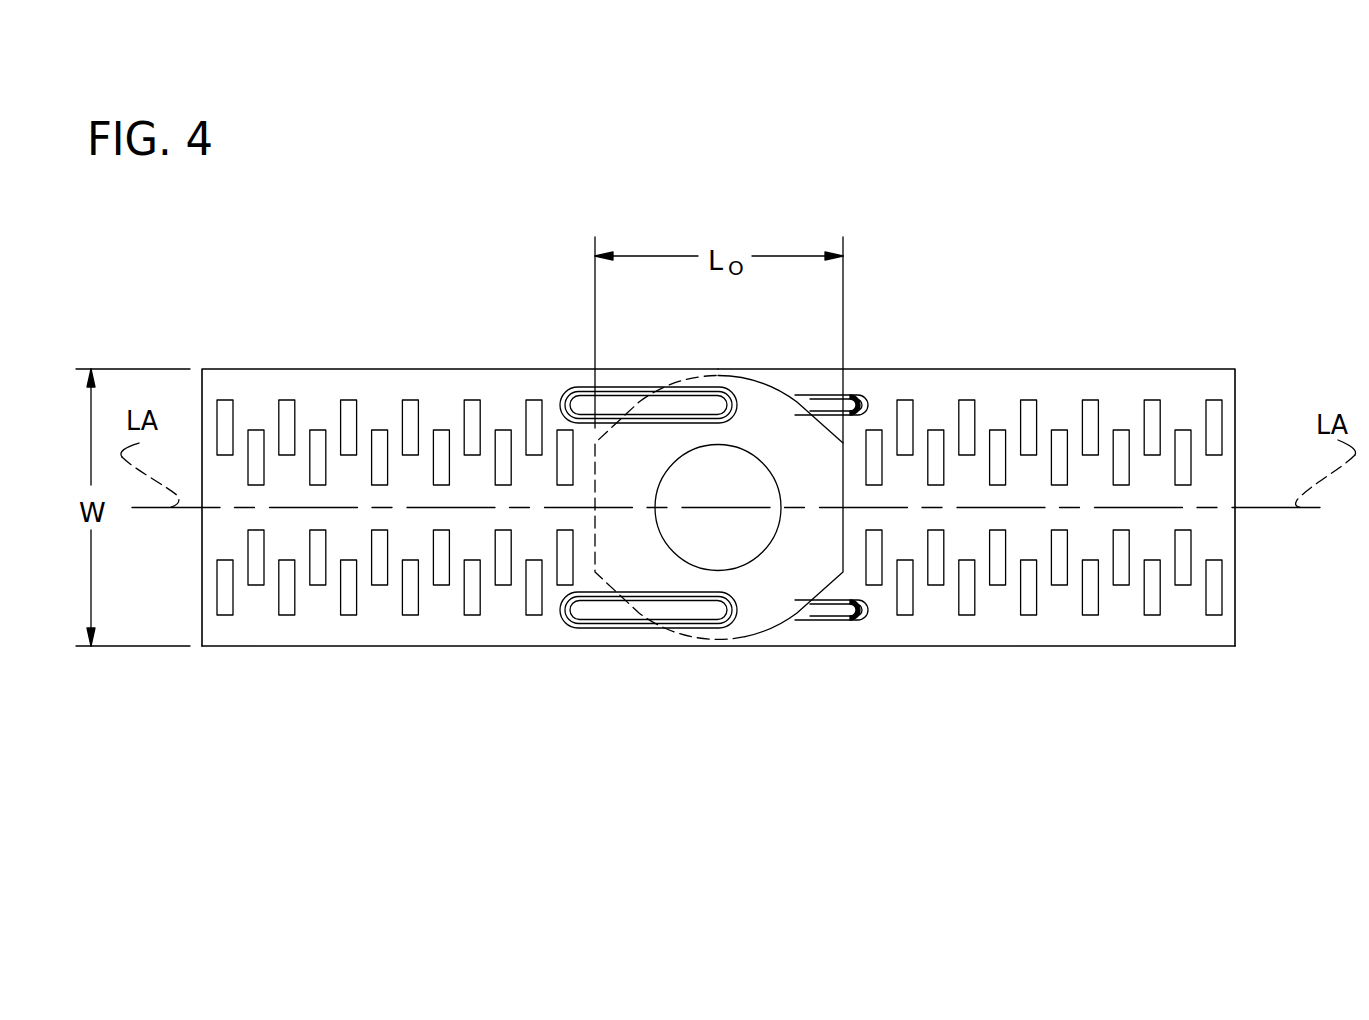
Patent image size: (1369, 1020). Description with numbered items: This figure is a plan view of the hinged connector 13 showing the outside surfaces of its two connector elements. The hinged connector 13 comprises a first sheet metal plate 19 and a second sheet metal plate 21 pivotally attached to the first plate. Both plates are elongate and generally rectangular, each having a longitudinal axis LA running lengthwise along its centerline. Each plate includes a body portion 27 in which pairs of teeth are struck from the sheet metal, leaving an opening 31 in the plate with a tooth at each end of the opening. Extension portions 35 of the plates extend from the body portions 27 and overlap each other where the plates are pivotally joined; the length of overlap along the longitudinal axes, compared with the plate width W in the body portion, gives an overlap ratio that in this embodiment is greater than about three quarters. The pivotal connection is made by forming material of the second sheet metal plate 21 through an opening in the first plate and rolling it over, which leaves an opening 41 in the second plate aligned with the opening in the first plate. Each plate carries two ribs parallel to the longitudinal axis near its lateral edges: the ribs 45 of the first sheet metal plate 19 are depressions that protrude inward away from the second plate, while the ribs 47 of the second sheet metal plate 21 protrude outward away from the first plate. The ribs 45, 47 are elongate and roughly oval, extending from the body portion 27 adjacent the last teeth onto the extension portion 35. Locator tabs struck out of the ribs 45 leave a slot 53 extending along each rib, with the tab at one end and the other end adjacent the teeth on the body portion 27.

The hinged connector 13 is at (872, 198).
The first sheet metal plate 19 is at (1108, 358).
The second sheet metal plate 21 is at (494, 357).
The body portion 27 is at (259, 621).
The opening 31 is at (443, 545).
The extension portion 35 is at (757, 613).
The opening 41 is at (717, 530).
The rib 45 is at (860, 403).
The rib 47 is at (620, 387).
The slot 53 is at (813, 403).